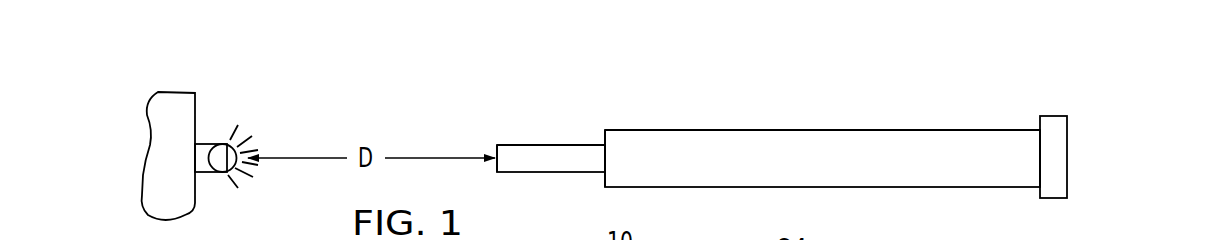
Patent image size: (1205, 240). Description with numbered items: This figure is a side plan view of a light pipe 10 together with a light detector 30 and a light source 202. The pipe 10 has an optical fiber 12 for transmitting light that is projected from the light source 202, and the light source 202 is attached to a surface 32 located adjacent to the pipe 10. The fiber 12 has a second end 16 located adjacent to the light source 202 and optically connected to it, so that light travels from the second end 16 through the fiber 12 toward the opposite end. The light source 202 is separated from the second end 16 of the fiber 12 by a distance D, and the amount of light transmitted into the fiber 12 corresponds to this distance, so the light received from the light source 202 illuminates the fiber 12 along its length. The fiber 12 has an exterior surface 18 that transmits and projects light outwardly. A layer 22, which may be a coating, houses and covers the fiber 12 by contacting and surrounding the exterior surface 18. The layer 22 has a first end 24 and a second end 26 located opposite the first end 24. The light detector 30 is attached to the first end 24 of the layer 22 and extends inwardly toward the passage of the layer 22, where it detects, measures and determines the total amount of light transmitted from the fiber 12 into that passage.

The light pipe 10 is at (827, 105).
The optical fiber 12 is at (565, 143).
The second end 16 is at (493, 148).
The exterior surface 18 is at (543, 160).
The layer 22 is at (728, 128).
The first end 24 is at (1022, 128).
The second end 26 is at (602, 183).
The light detector 30 is at (1053, 137).
The surface 32 is at (176, 110).
The light source 202 is at (203, 148).